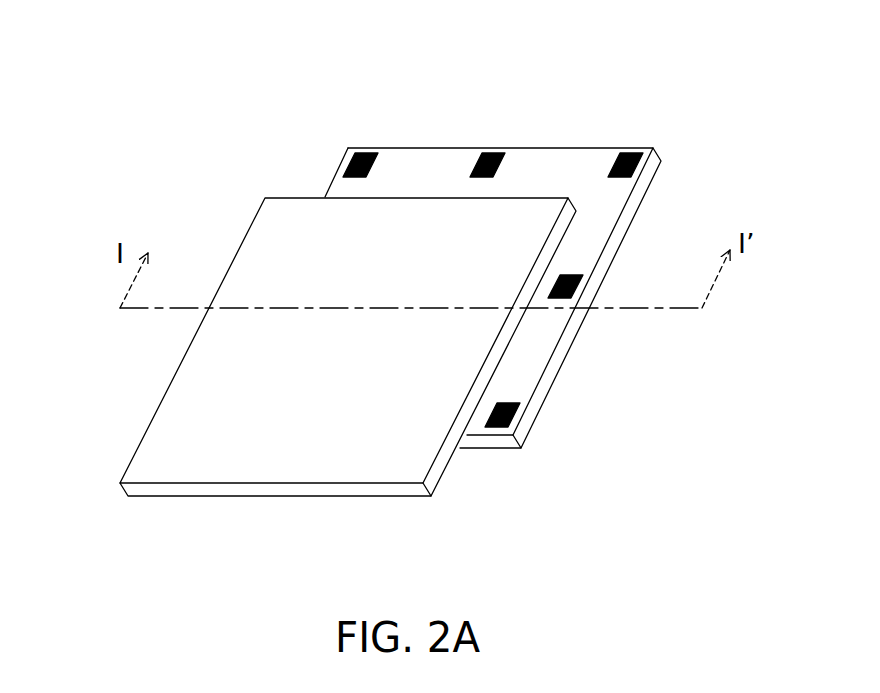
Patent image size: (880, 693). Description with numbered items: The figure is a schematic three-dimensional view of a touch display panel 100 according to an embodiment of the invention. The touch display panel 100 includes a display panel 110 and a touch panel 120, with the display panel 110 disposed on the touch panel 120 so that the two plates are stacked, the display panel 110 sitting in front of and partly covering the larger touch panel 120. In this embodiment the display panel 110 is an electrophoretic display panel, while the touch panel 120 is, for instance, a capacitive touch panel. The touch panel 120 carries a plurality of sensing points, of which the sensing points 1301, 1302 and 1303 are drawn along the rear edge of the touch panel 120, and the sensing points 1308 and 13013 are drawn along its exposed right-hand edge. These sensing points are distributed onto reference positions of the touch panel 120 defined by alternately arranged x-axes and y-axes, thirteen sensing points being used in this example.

The touch display panel 100 is at (691, 570).
The display panel 110 is at (243, 256).
The touch panel 120 is at (522, 165).
The sensing point 1301 is at (359, 152).
The sensing point 1302 is at (488, 152).
The sensing point 1303 is at (627, 152).
The sensing point 1308 is at (580, 287).
The sensing point 13013 is at (516, 417).